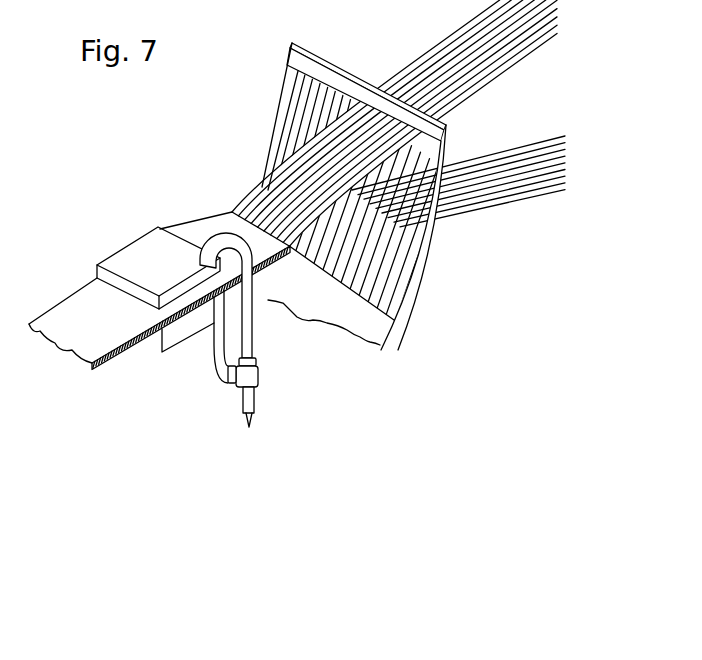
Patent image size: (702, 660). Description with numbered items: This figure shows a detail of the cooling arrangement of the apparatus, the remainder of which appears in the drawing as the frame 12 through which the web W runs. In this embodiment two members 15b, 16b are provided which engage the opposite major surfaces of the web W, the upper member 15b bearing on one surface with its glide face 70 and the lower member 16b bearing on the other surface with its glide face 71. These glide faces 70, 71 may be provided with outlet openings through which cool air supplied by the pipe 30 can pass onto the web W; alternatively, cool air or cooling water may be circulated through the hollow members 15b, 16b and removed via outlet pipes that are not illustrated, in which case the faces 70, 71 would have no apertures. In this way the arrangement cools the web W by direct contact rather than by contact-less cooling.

The heald frame 12 is at (398, 292).
The member 15b is at (156, 246).
The member 16b is at (175, 338).
The glide face 70 is at (184, 287).
The glide face 71 is at (181, 292).
The pipe 30 is at (255, 398).
The web W is at (70, 333).